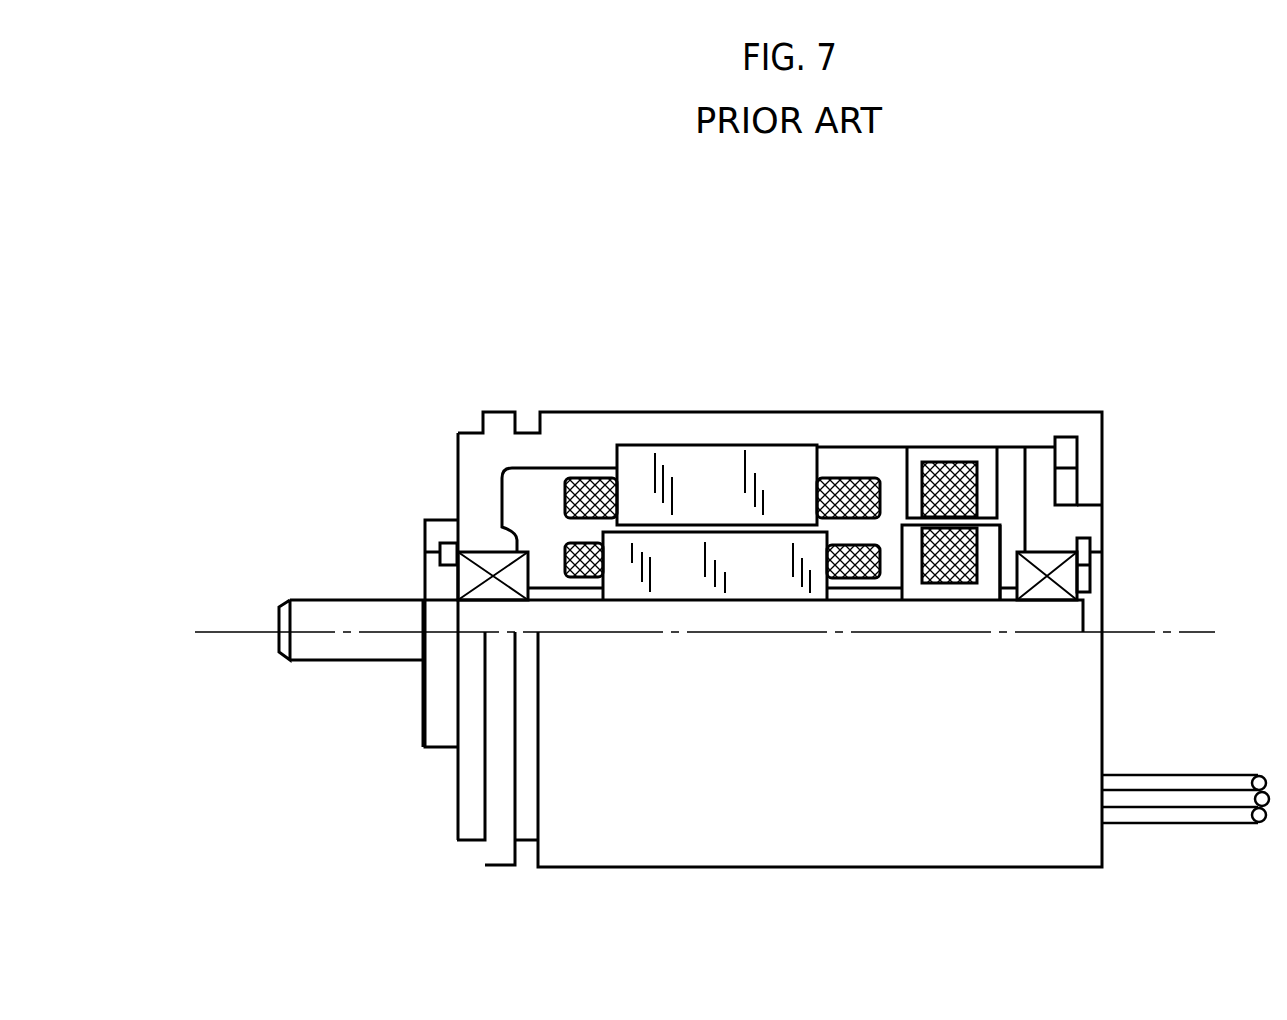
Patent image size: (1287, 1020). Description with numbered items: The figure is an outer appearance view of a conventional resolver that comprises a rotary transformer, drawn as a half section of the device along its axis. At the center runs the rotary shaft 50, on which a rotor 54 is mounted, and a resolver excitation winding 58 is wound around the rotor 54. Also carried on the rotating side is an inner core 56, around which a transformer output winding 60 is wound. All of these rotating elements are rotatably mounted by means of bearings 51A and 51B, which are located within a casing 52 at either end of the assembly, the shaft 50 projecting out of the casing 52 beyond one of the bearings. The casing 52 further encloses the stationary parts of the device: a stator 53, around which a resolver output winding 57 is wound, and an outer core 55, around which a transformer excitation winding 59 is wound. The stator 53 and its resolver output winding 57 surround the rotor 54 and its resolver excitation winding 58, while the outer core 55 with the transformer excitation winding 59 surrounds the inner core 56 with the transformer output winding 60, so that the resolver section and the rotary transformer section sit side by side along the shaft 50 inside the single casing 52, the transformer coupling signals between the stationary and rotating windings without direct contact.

The rotary shaft 50 is at (355, 597).
The bearing 51A is at (490, 552).
The bearing 51B is at (1047, 562).
The casing 52 is at (498, 410).
The stator 53 is at (702, 482).
The rotor 54 is at (752, 568).
The outer core 55 is at (984, 458).
The inner core 56 is at (987, 552).
The resolver output winding 57 is at (580, 480).
The resolver excitation winding 58 is at (563, 550).
The transformer excitation winding 59 is at (938, 482).
The transformer output winding 60 is at (920, 557).